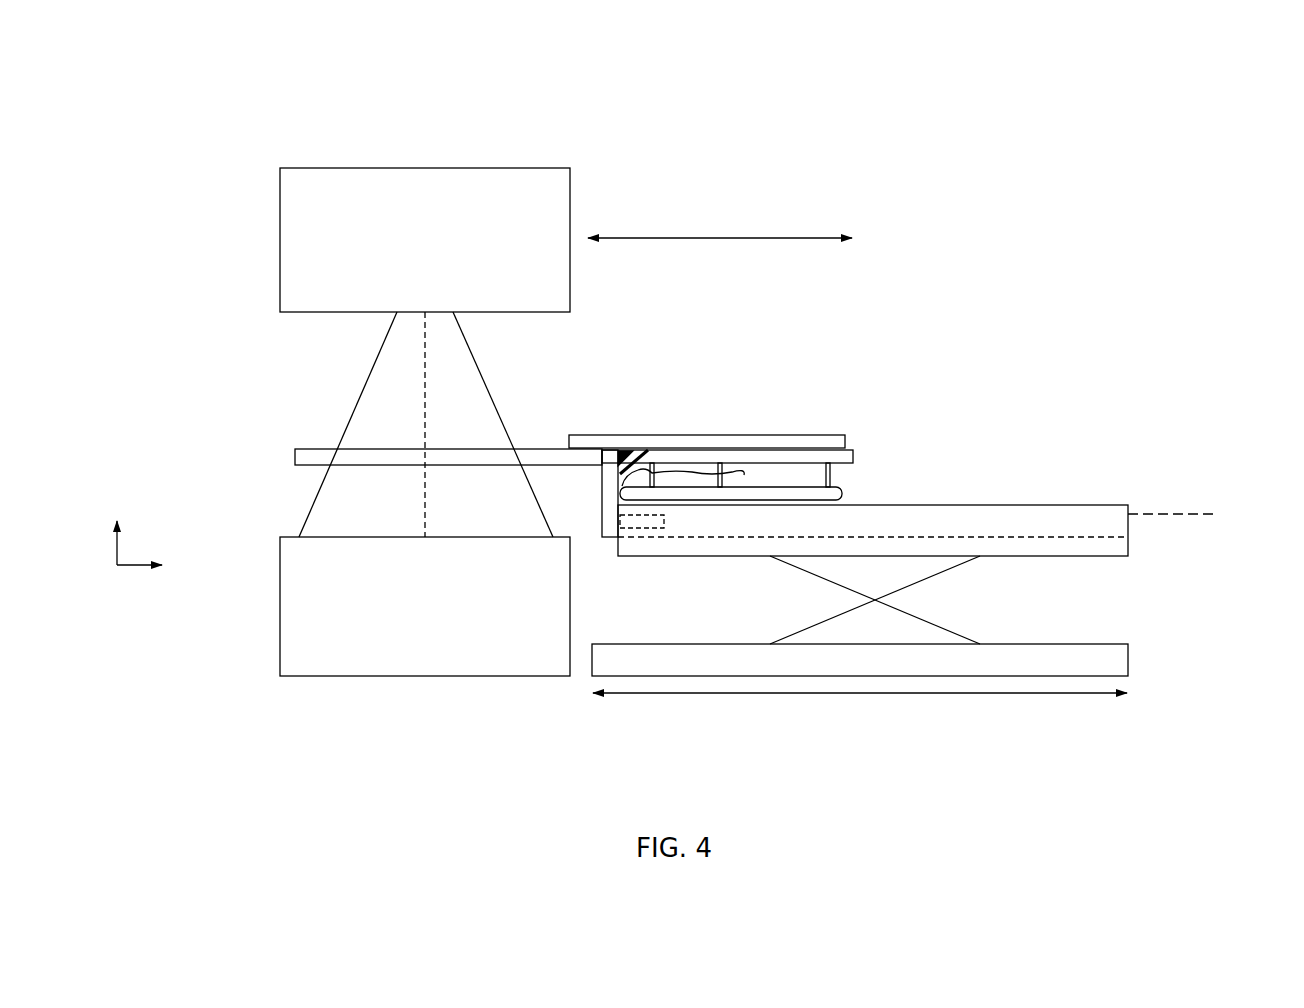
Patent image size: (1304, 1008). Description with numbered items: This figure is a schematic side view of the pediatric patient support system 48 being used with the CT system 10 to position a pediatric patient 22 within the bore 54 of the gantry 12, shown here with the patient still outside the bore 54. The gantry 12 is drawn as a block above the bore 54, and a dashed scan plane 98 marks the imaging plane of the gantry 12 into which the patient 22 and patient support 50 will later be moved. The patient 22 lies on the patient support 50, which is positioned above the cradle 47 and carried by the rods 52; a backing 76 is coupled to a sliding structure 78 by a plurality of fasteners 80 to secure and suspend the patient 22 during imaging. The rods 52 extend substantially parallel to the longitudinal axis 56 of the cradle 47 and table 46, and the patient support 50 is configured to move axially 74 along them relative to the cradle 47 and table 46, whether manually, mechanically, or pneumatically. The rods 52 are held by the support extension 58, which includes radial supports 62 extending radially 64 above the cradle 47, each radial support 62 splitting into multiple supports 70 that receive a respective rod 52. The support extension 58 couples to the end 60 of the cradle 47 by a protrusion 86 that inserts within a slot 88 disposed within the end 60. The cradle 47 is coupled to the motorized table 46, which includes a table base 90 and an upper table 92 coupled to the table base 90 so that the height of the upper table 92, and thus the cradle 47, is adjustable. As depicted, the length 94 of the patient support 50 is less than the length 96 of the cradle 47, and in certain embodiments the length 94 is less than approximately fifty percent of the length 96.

The CT system 10 is at (365, 120).
The gantry 12 is at (423, 168).
The pediatric patient 22 is at (700, 470).
The motorized table 46 is at (1188, 582).
The cradle 47 is at (1010, 505).
The pediatric patient support system 48 is at (770, 423).
The patient support 50 is at (594, 487).
The rods 52 is at (537, 449).
The bore 54 is at (548, 348).
The longitudinal axis 56 is at (1170, 514).
The support extension 58 is at (597, 535).
The end 60 is at (614, 538).
The radial supports 62 is at (600, 478).
The radial direction 64 is at (112, 548).
The supports 70 is at (607, 449).
The axial direction 74 is at (127, 567).
The backing 76 is at (845, 493).
The sliding structure 78 is at (833, 432).
The fasteners 80 is at (853, 458).
The protrusion 86 is at (641, 530).
The slot 88 is at (666, 520).
The table base 90 is at (1130, 652).
The upper table 92 is at (1098, 556).
The length of the patient support 94 is at (717, 232).
The length of the cradle 96 is at (913, 696).
The scan plane 98 is at (428, 495).